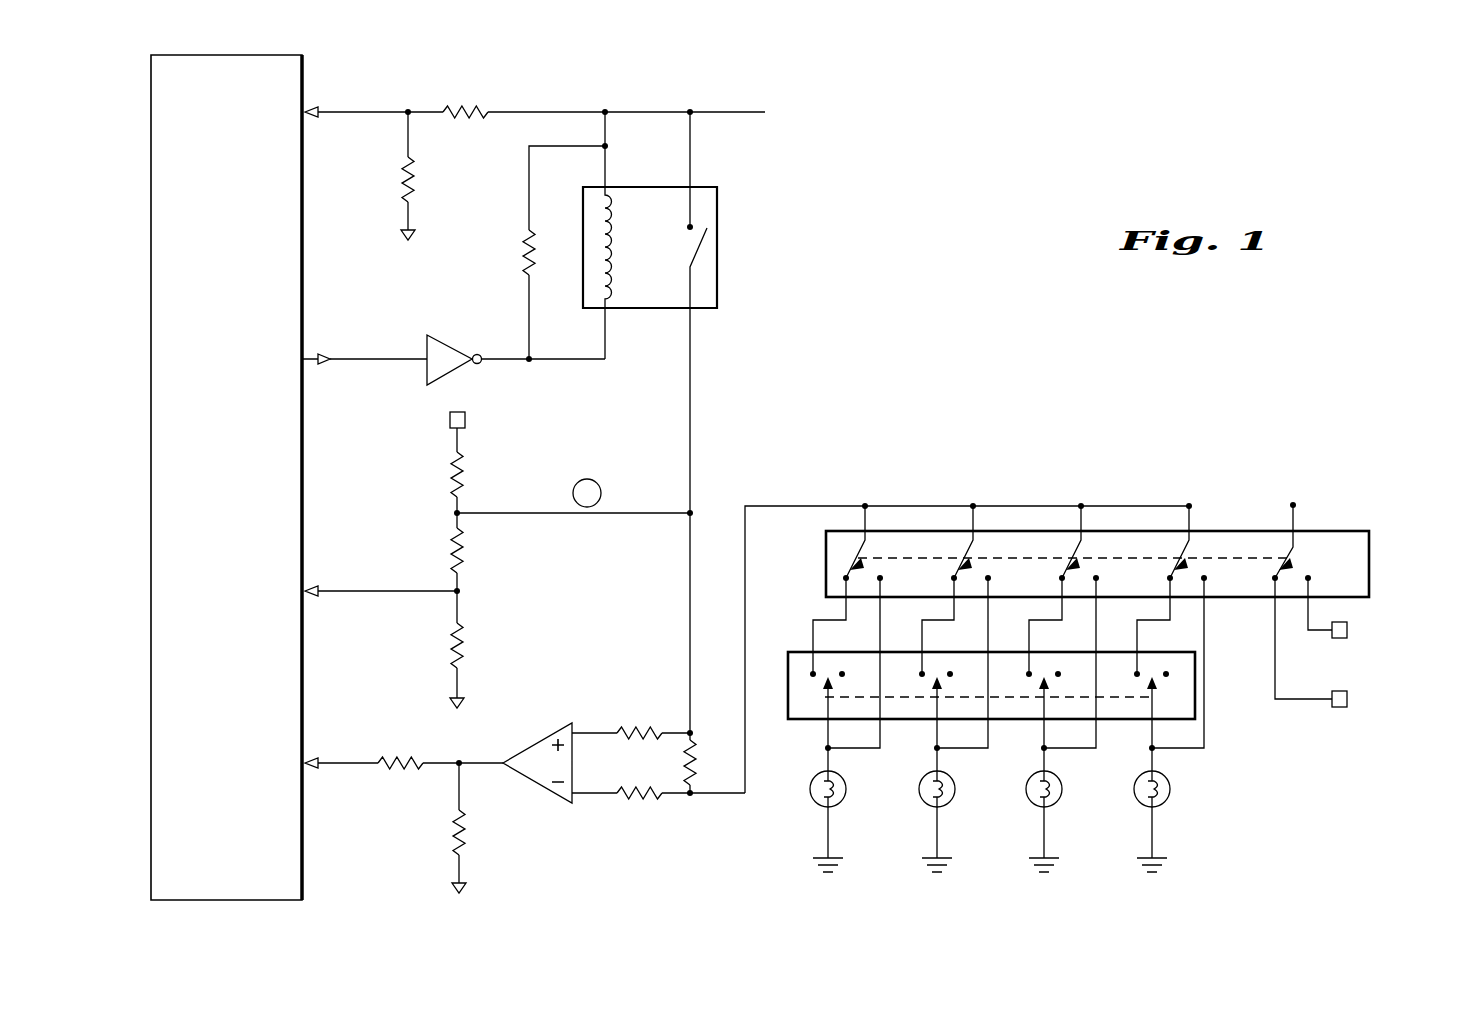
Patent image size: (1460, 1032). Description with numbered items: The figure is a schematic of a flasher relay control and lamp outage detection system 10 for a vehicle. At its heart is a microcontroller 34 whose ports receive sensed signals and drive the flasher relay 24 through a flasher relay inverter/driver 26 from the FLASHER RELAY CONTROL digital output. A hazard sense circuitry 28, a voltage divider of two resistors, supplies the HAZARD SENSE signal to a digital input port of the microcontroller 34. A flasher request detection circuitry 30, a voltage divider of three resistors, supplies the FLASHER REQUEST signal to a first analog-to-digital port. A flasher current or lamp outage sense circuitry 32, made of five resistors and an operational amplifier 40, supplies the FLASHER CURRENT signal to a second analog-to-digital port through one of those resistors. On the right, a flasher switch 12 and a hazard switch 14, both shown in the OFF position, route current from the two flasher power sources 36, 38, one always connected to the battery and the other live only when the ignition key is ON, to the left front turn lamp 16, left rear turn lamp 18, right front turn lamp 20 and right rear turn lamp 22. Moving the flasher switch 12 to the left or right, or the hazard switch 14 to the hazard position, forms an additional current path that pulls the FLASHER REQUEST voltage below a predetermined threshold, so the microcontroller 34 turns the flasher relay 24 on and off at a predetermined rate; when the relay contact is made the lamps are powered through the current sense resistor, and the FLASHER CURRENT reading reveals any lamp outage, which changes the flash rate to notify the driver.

The flasher relay control and lamp outage detection system 10 is at (1350, 838).
The flasher switch 12 is at (820, 722).
The hazard switch 14 is at (826, 545).
The left front turn lamp 16 is at (825, 807).
The left rear turn lamp 18 is at (934, 807).
The right front turn lamp 20 is at (1041, 807).
The right rear turn lamp 22 is at (1150, 805).
The flasher relay 24 is at (716, 280).
The flasher relay inverter/driver 26 is at (453, 338).
The hazard sense circuitry 28 is at (378, 153).
The flasher request detection circuitry 30 is at (490, 578).
The flasher current or lamp outage sense circuitry 32 is at (403, 817).
The microcontroller 34 is at (303, 698).
The flasher power source 36 is at (448, 416).
The flasher power source 38 is at (1338, 707).
The operational amplifier 40 is at (541, 790).